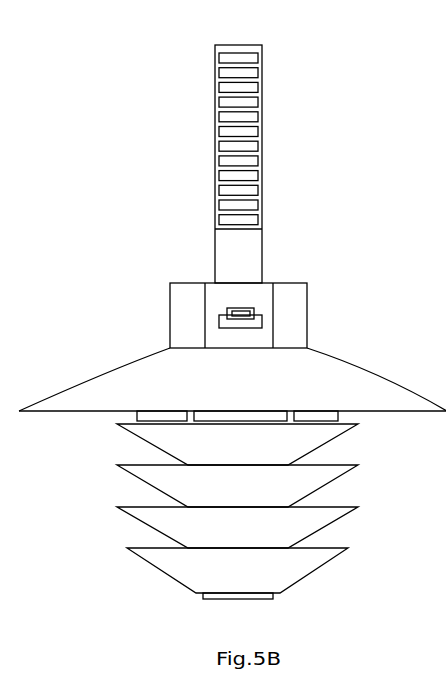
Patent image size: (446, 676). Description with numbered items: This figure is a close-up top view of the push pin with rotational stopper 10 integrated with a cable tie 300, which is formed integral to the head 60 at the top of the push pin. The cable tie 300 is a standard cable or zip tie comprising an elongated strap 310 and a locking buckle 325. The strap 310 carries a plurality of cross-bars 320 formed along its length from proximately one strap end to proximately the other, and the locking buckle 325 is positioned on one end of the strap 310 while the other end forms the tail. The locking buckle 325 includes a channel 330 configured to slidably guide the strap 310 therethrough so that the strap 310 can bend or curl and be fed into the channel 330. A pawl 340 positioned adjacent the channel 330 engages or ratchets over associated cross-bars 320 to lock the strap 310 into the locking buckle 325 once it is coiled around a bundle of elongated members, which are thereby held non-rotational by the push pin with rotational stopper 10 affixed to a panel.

The cable tie 300 is at (170, 157).
The strap 310 is at (278, 143).
The cross-bars 320 is at (253, 47).
The head 60 is at (187, 289).
The locking buckle 325 is at (221, 326).
The channel 330 is at (263, 322).
The pawl 340 is at (256, 311).
The push pin with rotational stopper 10 is at (110, 457).